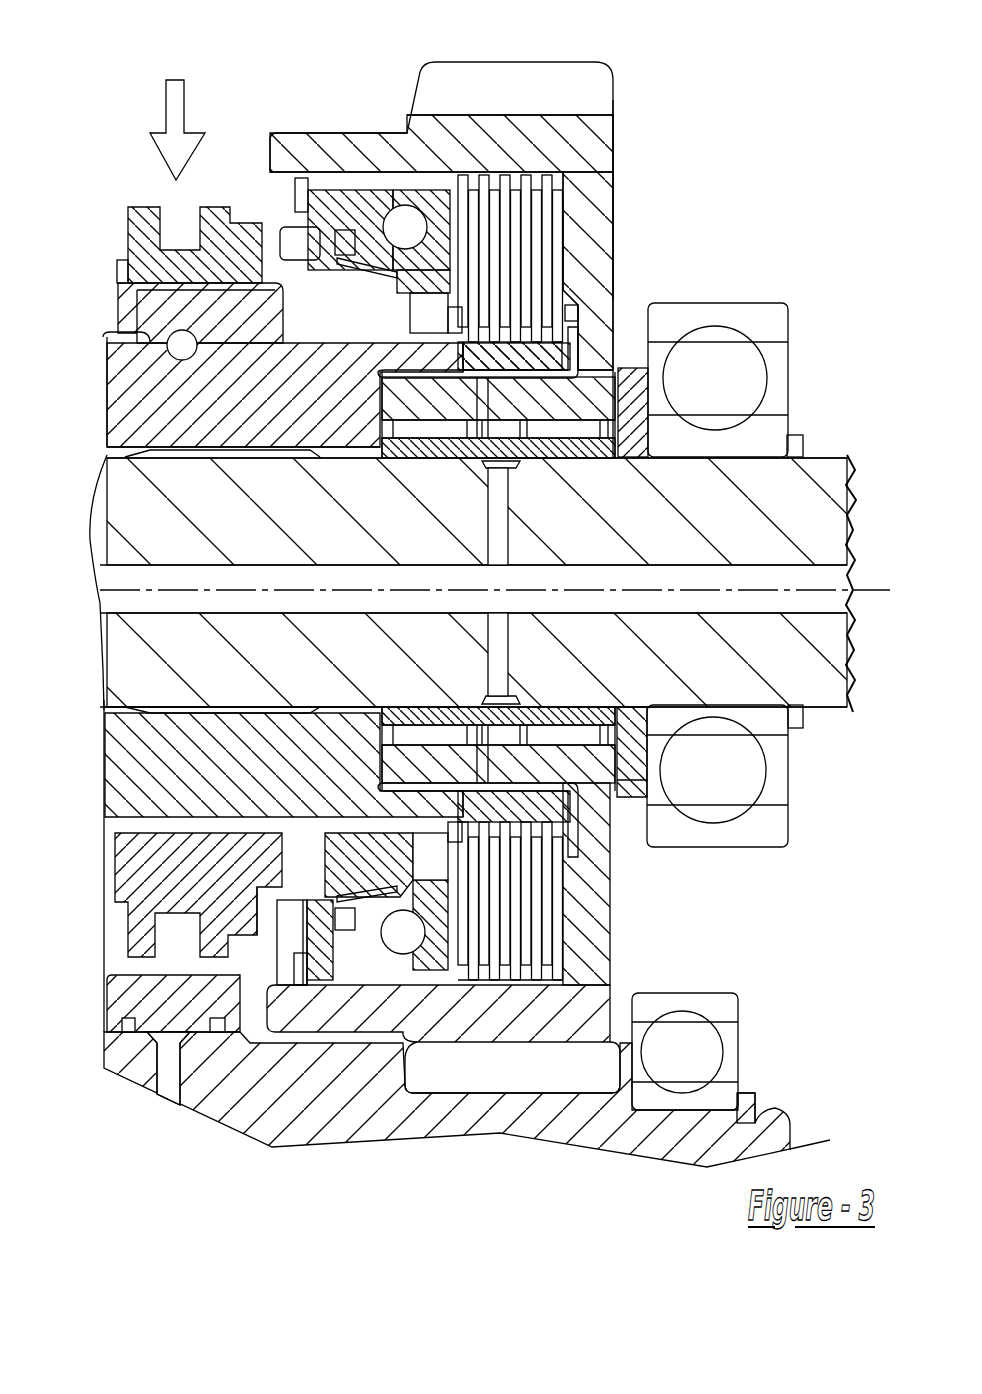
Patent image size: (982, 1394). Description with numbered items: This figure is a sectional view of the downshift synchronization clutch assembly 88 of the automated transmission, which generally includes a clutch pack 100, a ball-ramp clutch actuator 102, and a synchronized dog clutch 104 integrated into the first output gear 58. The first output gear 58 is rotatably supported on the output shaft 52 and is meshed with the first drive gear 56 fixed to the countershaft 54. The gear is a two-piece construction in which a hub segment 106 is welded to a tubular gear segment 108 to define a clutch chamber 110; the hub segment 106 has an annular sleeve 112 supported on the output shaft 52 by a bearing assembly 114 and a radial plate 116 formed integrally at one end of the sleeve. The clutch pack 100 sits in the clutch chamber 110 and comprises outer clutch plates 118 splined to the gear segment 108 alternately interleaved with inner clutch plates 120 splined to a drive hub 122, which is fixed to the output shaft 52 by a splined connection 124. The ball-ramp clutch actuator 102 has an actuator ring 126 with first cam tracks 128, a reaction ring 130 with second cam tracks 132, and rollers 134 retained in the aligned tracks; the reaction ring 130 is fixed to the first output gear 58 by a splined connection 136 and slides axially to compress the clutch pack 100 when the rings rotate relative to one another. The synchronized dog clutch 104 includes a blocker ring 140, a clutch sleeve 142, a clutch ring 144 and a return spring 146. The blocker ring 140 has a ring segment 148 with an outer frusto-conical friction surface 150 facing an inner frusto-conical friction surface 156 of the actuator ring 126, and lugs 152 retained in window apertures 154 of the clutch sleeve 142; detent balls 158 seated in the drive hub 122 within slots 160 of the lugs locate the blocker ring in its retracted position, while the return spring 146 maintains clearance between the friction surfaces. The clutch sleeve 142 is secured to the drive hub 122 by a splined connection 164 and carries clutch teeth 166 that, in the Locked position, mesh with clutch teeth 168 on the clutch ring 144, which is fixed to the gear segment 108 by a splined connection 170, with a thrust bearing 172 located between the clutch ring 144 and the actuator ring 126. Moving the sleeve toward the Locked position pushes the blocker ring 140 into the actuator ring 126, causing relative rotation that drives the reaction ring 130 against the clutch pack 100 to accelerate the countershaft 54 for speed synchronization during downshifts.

The output shaft 52 is at (825, 475).
The countershaft 54 is at (197, 1070).
The first drive gear 56 is at (313, 1057).
The first output gear 58 is at (622, 132).
The downshift synchronization clutch assembly 88 is at (202, 78).
The clutch pack 100 is at (569, 299).
The ball-ramp clutch actuator 102 is at (383, 985).
The synchronized dog clutch 104 is at (116, 225).
The hub segment 106 is at (620, 182).
The tubular gear segment 108 is at (602, 1005).
The clutch chamber 110 is at (575, 316).
The annular sleeve 112 is at (423, 405).
The bearing assembly 114 is at (577, 428).
The radial plate 116 is at (600, 228).
The outer clutch plates 118 is at (492, 962).
The inner clutch plates 120 is at (533, 867).
The drive hub 122 is at (128, 763).
The splined connection 124 is at (200, 703).
The actuator ring 126 is at (362, 184).
The first cam tracks 128 is at (423, 950).
The reaction ring 130 is at (376, 198).
The second cam tracks 132 is at (425, 945).
The rollers 134 is at (403, 932).
The splined connection 136 is at (447, 183).
The blocker ring 140 is at (155, 303).
The clutch sleeve 142 is at (137, 267).
The clutch ring 144 is at (300, 225).
The return spring 146 is at (430, 840).
The ring segment 148 is at (333, 867).
The outer frusto-conical friction surface 150 is at (365, 905).
The lugs 152 is at (248, 327).
The window apertures 154 is at (117, 287).
The inner frusto-conical friction surface 156 is at (362, 270).
The detent balls 158 is at (180, 347).
The slots 160 is at (140, 338).
The splined connection 164 is at (167, 828).
The clutch teeth 166 is at (240, 915).
The clutch teeth 168 is at (290, 922).
The splined connection 170 is at (347, 985).
The thrust bearing 172 is at (318, 186).